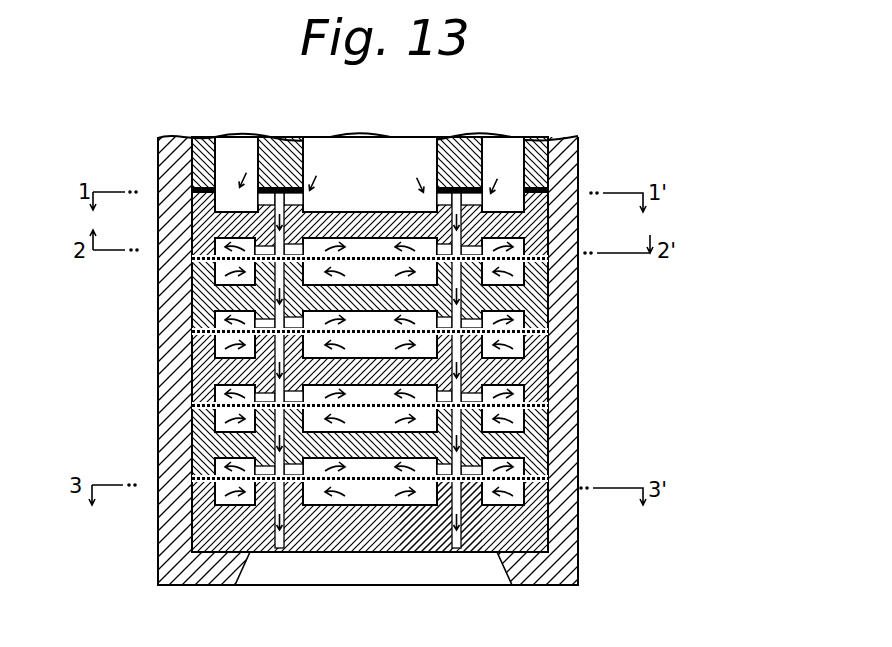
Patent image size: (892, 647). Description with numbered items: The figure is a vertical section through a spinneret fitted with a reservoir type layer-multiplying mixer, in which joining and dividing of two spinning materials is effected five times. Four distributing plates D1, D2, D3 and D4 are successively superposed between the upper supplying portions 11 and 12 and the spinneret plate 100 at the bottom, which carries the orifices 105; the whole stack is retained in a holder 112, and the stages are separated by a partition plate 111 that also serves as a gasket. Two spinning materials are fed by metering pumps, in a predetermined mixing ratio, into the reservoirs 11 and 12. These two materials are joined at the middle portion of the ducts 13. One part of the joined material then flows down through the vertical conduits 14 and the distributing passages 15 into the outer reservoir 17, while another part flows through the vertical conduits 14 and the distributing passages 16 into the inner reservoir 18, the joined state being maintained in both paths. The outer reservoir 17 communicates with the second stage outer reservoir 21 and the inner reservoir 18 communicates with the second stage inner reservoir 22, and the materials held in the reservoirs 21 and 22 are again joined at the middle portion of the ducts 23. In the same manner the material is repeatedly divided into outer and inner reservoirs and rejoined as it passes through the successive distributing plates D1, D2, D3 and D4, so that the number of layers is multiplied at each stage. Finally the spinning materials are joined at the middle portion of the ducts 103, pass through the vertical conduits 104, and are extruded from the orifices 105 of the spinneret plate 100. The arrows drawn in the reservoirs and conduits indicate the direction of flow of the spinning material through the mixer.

The supplying portion 11 is at (236, 150).
The supplying portion 12 is at (381, 160).
The duct 13 is at (263, 185).
The vertical conduit 14 is at (310, 187).
The distributing passage 15 is at (535, 239).
The distributing passage 16 is at (437, 150).
The outer reservoir 17 is at (516, 253).
The inner reservoir 18 is at (331, 237).
The second stage outer reservoir 21 is at (518, 276).
The second stage inner reservoir 22 is at (191, 288).
The duct 23 is at (522, 302).
The spinneret plate 100 is at (332, 542).
The duct 103 is at (427, 540).
The vertical conduit 104 is at (468, 530).
The orifice 105 is at (457, 548).
The partition plate 111 is at (550, 477).
The holder 112 is at (553, 553).
The distributing plate D1 is at (191, 226).
The distributing plate D2 is at (191, 308).
The distributing plate D3 is at (191, 366).
The distributing plate D4 is at (191, 432).